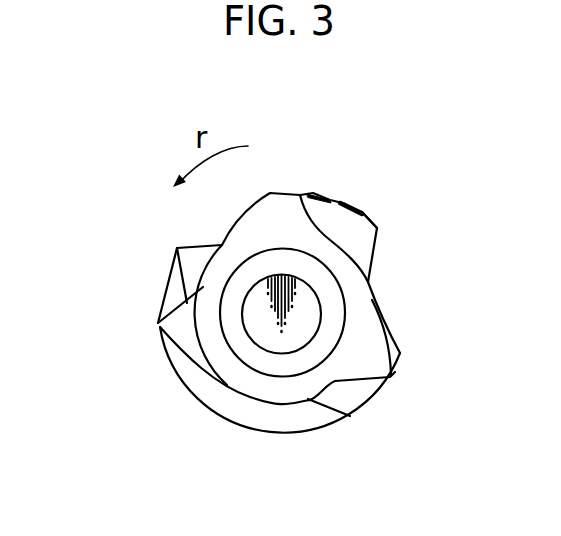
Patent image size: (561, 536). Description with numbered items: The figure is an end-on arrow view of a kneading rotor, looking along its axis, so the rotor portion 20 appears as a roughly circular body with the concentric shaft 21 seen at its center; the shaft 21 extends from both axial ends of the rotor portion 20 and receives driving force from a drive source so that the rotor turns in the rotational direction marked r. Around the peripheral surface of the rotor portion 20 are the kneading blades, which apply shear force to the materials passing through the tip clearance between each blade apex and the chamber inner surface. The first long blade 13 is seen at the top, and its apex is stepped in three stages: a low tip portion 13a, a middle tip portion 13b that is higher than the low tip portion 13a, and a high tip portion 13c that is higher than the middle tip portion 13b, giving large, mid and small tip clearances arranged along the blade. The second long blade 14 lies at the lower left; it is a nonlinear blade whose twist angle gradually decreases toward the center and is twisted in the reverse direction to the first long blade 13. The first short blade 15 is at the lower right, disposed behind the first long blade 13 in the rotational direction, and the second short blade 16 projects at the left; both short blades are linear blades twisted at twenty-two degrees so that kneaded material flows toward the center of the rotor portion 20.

The first long blade 13 is at (378, 195).
The low tip portion 13a is at (302, 195).
The middle tip portion 13b is at (332, 197).
The high tip portion 13c is at (365, 213).
The second long blade 14 is at (213, 426).
The first short blade 15 is at (386, 398).
The second short blade 16 is at (160, 267).
The rotor portion 20 is at (360, 288).
The shaft 21 is at (296, 358).